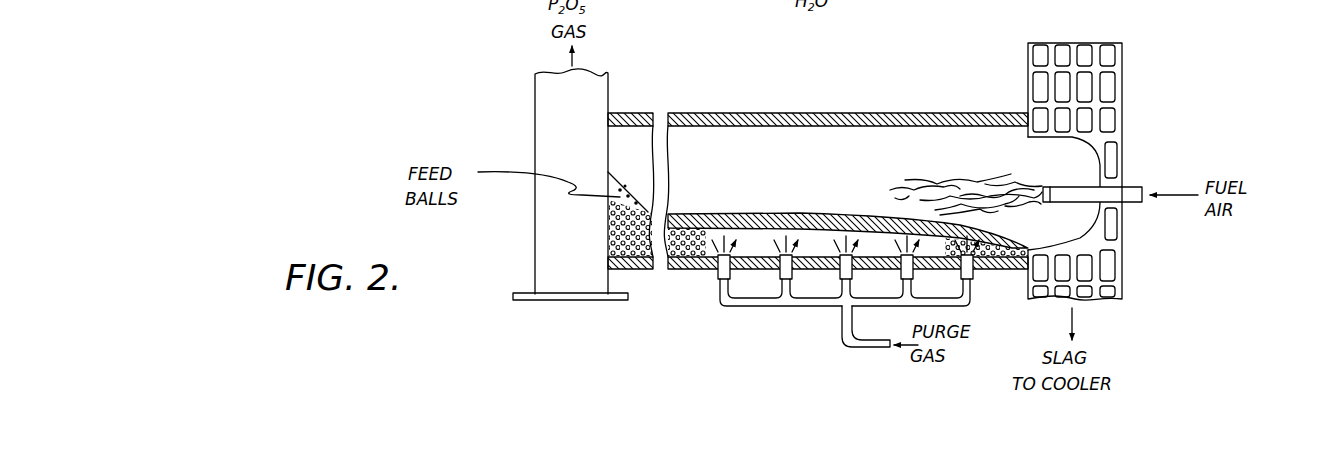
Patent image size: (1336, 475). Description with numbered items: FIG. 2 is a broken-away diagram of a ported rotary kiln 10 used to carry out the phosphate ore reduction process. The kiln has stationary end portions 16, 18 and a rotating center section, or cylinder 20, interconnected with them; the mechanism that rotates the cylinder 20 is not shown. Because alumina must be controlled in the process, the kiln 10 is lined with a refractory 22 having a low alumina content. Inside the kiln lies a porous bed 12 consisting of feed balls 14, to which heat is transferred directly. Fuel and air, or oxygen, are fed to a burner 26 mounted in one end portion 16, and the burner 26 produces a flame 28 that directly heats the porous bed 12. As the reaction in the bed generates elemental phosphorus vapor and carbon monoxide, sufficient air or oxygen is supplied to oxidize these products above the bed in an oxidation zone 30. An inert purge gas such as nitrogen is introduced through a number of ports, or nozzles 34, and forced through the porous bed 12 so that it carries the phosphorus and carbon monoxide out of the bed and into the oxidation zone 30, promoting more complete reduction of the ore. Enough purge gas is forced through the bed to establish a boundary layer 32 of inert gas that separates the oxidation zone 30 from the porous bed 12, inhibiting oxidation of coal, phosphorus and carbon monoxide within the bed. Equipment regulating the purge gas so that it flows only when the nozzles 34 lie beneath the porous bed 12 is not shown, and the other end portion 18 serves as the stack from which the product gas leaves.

The ported kiln 10 is at (791, 84).
The porous bed 12 is at (690, 260).
The feed balls 14 is at (689, 244).
The stationary end portion 16 is at (1122, 73).
The stationary end portion 18 is at (535, 229).
The rotating center section 20 is at (911, 118).
The refractory 22 is at (712, 122).
The burner 26 is at (1136, 188).
The flame 28 is at (984, 162).
The oxidation zone 30 is at (828, 142).
The boundary layer 32 is at (752, 216).
The nozzles 34 is at (718, 278).